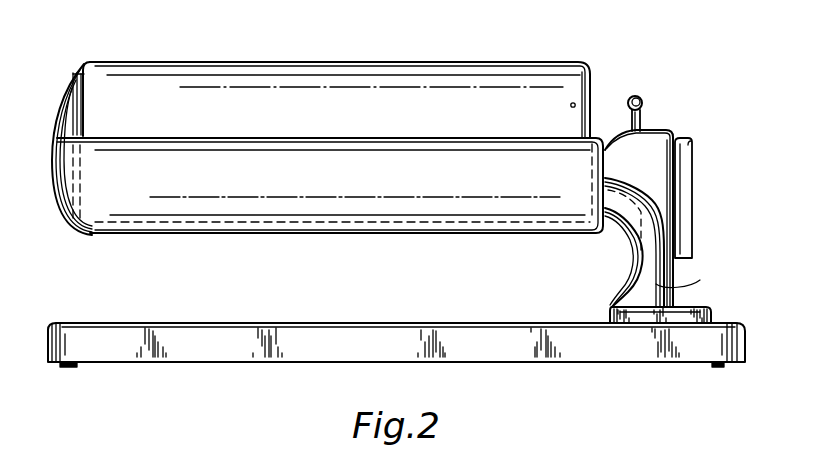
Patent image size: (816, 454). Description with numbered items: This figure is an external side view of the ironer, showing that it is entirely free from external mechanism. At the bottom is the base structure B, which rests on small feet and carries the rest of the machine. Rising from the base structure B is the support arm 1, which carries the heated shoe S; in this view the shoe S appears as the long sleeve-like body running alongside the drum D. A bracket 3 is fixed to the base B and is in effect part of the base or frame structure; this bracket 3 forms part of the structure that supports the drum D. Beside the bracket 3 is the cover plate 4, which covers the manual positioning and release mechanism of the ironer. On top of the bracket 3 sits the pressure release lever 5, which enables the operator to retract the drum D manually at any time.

The support arm 1 is at (683, 279).
The bracket 3 is at (655, 174).
The cover plate 4 is at (683, 160).
The pressure release lever 5 is at (641, 119).
The drum D is at (343, 119).
The heated shoe S is at (322, 189).
The base structure B is at (355, 356).